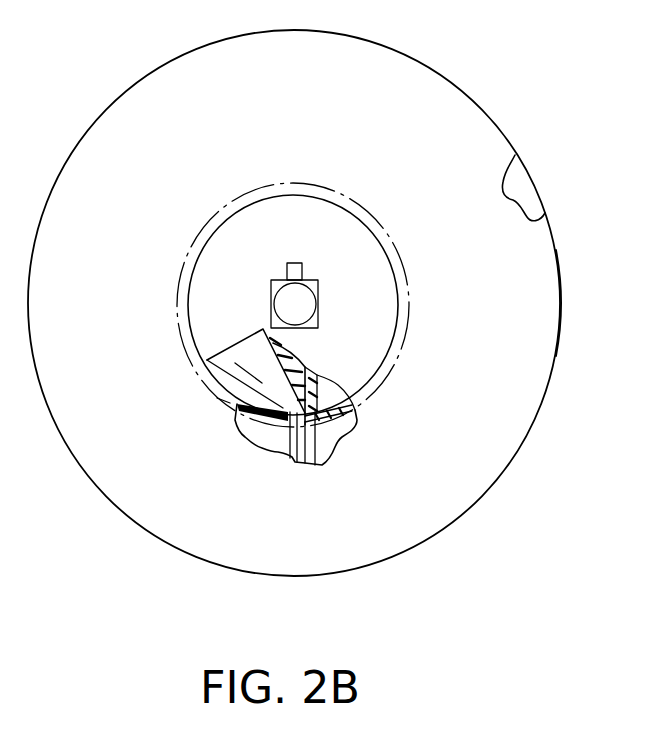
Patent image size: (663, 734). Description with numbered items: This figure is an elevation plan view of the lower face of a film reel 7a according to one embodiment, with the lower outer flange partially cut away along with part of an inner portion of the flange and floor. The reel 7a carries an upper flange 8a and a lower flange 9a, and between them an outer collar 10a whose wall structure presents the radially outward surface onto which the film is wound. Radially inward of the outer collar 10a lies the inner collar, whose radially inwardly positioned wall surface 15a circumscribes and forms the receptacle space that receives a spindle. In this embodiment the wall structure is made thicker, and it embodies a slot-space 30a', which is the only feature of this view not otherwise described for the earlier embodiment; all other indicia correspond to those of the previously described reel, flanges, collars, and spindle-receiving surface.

The reel 7a is at (490, 530).
The upper flange 8a is at (530, 200).
The lower flange 9a is at (537, 372).
The outer collar 10a is at (323, 440).
The radially inwardly positioned wall surface 15a is at (287, 300).
The slot-space 30a' is at (316, 247).